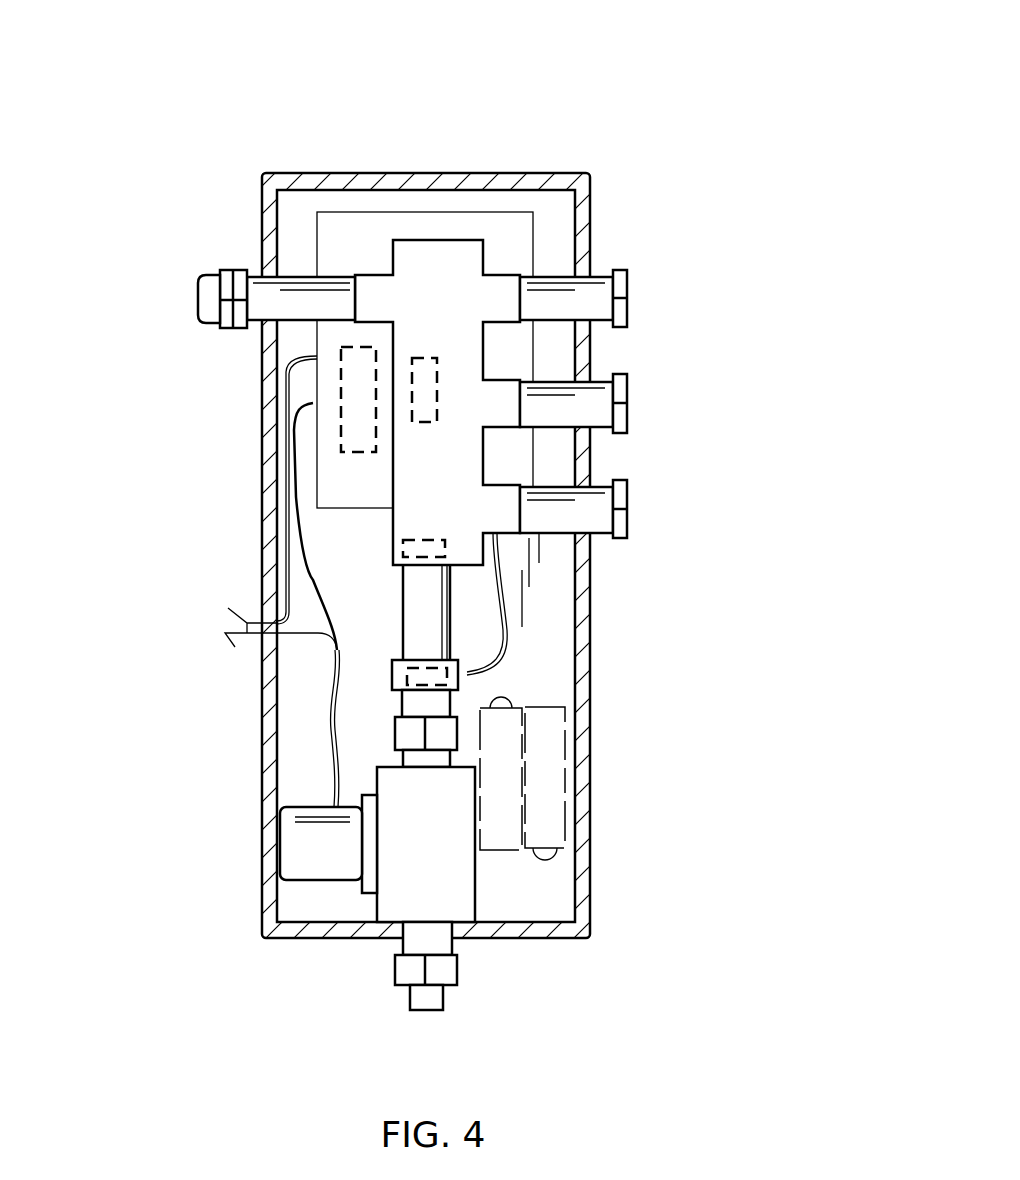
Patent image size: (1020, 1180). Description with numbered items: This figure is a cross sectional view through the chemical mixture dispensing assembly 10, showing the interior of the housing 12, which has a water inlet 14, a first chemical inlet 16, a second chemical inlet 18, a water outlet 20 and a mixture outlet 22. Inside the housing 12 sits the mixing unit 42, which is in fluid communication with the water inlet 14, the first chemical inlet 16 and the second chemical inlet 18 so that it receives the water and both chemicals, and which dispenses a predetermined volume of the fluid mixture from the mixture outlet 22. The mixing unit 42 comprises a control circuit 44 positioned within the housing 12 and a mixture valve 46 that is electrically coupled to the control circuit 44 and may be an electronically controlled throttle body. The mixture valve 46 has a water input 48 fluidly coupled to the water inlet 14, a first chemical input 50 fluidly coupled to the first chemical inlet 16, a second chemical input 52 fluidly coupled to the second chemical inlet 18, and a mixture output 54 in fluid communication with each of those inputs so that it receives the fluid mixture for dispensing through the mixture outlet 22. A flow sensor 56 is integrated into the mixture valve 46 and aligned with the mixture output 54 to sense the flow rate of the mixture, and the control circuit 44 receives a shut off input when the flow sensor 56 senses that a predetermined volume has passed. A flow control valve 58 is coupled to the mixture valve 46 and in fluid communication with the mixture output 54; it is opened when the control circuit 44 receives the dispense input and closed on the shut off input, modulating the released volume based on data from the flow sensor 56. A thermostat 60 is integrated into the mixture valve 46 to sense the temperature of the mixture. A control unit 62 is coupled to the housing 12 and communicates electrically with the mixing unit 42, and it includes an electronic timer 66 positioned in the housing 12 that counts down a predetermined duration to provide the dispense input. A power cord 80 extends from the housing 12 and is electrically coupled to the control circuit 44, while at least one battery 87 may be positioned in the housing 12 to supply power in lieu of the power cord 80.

The chemical mixture dispensing assembly 10 is at (295, 133).
The housing 12 is at (475, 177).
The water inlet 14 is at (618, 270).
The first chemical inlet 16 is at (613, 376).
The second chemical inlet 18 is at (616, 481).
The water outlet 20 is at (228, 270).
The mixture outlet 22 is at (408, 998).
The mixing unit 42 is at (365, 291).
The control circuit 44 is at (341, 378).
The mixture valve 46 is at (430, 240).
The water input 48 is at (522, 277).
The first chemical input 50 is at (522, 400).
The second chemical input 52 is at (522, 510).
The mixture output 54 is at (425, 922).
The flow sensor 56 is at (467, 672).
The flow control valve 58 is at (308, 807).
The thermostat 60 is at (405, 547).
The control unit 62 is at (317, 240).
The electronic timer 66 is at (412, 415).
The power cord 80 is at (250, 622).
The battery 87 is at (565, 740).